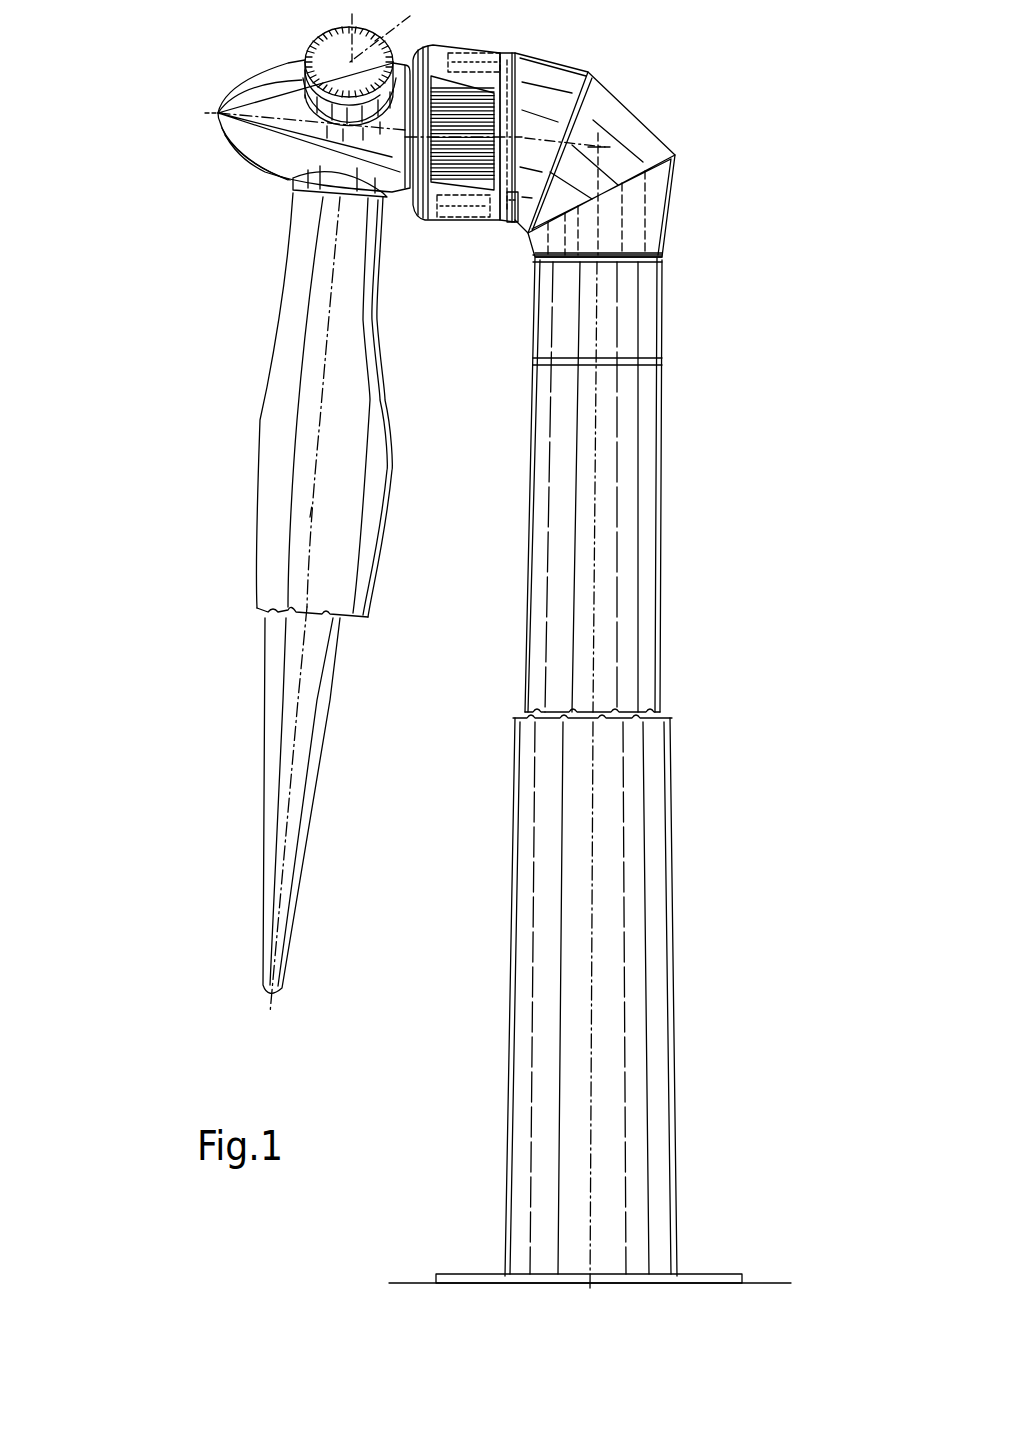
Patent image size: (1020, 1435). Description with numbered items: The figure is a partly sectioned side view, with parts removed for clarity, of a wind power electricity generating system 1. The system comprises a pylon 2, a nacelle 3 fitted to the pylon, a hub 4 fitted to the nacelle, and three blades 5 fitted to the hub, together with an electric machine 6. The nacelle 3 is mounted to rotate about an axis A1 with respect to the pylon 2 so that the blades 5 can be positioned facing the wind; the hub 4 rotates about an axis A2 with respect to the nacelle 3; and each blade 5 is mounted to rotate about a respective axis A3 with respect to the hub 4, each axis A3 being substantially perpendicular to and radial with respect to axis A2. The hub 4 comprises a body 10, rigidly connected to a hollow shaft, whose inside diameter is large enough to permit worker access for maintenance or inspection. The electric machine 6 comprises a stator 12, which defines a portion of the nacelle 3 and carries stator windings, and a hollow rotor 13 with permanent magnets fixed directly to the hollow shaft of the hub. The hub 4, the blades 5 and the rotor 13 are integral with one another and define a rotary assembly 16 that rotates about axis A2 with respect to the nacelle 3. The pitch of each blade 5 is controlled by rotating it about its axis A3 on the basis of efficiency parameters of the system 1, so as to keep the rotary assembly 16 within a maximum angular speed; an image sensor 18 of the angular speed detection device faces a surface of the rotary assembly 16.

The wind power system 1 is at (183, 372).
The pylon 2 is at (640, 565).
The nacelle 3 is at (666, 128).
The hub 4 is at (212, 130).
The blades 5 is at (313, 58).
The electric machine 6 is at (508, 56).
The body 10 is at (247, 150).
The stator 12 is at (458, 212).
The rotor 13 is at (441, 205).
The rotary assembly 16 is at (213, 113).
The image sensor 18 is at (512, 228).
The axis A1 is at (590, 845).
The axis A2 is at (611, 97).
The axis A3 is at (235, 556).